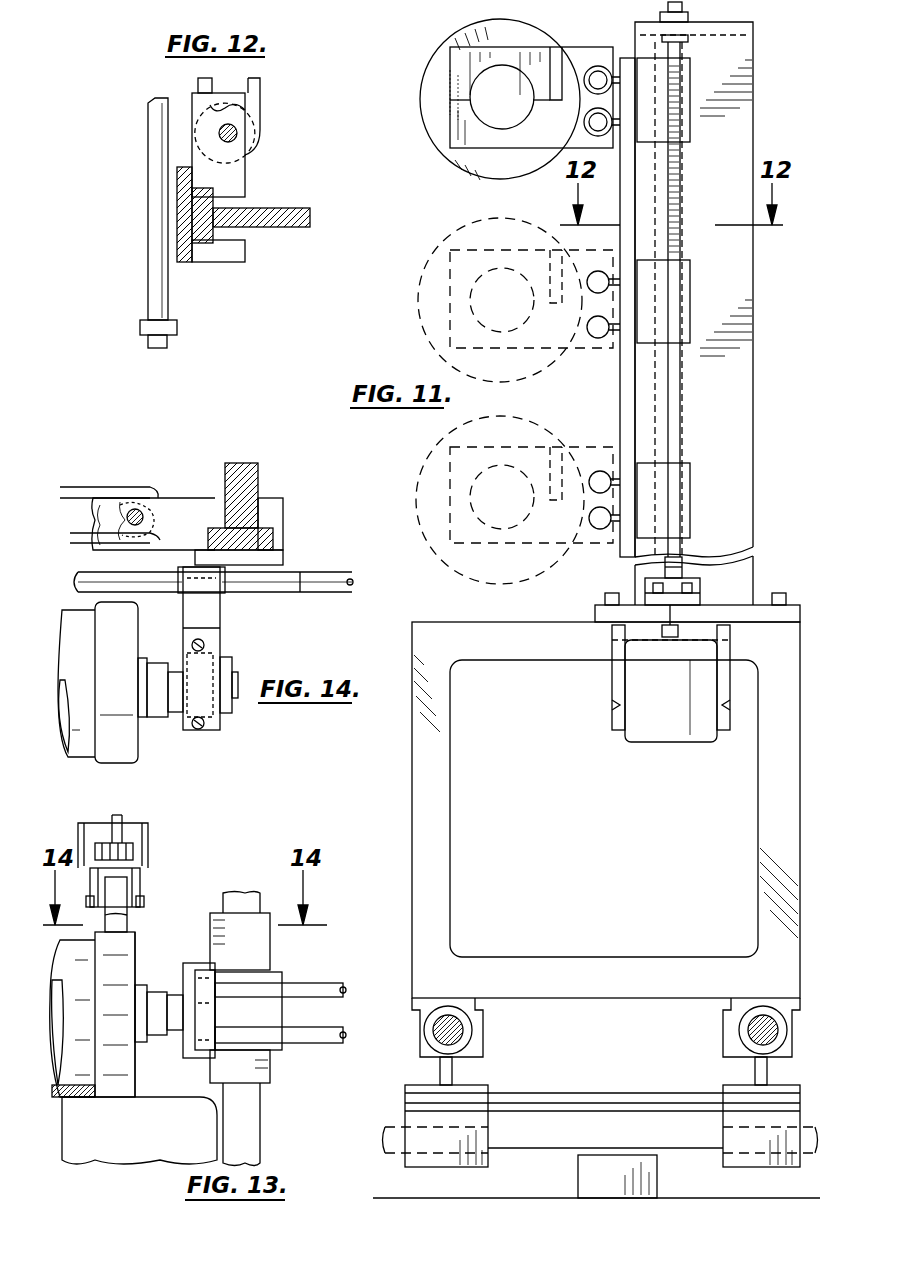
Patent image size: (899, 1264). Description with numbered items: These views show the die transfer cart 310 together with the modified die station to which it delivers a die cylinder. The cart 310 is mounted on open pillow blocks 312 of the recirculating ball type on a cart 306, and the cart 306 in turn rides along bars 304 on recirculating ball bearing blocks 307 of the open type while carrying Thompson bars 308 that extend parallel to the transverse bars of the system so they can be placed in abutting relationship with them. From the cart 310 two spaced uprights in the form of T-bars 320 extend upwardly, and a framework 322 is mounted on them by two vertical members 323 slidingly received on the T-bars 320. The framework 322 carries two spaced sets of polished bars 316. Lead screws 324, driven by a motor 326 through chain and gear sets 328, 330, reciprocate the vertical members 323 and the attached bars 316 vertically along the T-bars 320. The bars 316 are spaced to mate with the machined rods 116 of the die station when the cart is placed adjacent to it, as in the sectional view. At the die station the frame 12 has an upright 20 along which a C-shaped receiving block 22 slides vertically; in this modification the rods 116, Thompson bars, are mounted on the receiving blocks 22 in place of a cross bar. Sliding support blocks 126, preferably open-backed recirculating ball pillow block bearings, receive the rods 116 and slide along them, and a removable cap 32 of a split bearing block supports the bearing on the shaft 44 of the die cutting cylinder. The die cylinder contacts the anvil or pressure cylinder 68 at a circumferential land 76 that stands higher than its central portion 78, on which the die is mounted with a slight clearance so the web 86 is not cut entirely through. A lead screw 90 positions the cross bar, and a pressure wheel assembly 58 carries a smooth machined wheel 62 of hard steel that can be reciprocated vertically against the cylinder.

In FIG. 14, the frame 12 is at (233, 466).
In FIG. 13, the frame 12 is at (238, 892).
In FIG. 14, the upright 20 is at (275, 546).
In FIG. 13, the upright 20 is at (271, 949).
In FIG. 14, the receiving block 22 is at (283, 512).
In FIG. 13, the receiving block 22 is at (272, 1055).
In FIG. 14, the removable cap 32 is at (200, 730).
In FIG. 14, the shaft 44 is at (175, 697).
In FIG. 13, the shaft 44 is at (178, 992).
In FIG. 13, the pressure wheel assembly 58 is at (148, 852).
In FIG. 13, the smooth machined wheel 62 is at (115, 920).
In FIG. 13, the anvil or pressure cylinder 68 is at (100, 1160).
In FIG. 13, the circumferential land 76 is at (132, 957).
In FIG. 14, the central portion 78 is at (85, 758).
In FIG. 13, the central portion 78 is at (118, 1098).
In FIG. 11, the central portion 78 is at (440, 152).
In FIG. 13, the web 86 is at (90, 1099).
In FIG. 14, the lead screw 90 is at (141, 506).
In FIG. 14, the machined rod 116 is at (278, 582).
In FIG. 13, the machined rod 116 is at (291, 987).
In FIG. 14, the sliding support block 126 is at (210, 614).
In FIG. 13, the sliding support block 126 is at (189, 1048).
In FIG. 11, the sliding support block 126 is at (565, 153).
In FIG. 11, the bar 304 is at (384, 1148).
In FIG. 11, the cart 306 is at (584, 1094).
In FIG. 11, the recirculating ball bearing block 307 is at (448, 1165).
In FIG. 11, the Thompson bar 308 is at (462, 1034).
In FIG. 11, the transfer frame or cart 310 is at (411, 801).
In FIG. 11, the open pillow block 312 is at (420, 1012).
In FIG. 12, the polished bar 316 is at (148, 229).
In FIG. 14, the polished bar 316 is at (338, 575).
In FIG. 13, the polished bar 316 is at (297, 1023).
In FIG. 11, the polished bar 316 is at (586, 112).
In FIG. 12, the T-bar 320 is at (283, 224).
In FIG. 11, the T-bar 320 is at (755, 378).
In FIG. 12, the framework 322 is at (243, 261).
In FIG. 11, the framework 322 is at (625, 56).
In FIG. 12, the vertical member 323 is at (181, 263).
In FIG. 11, the vertical member 323 is at (627, 182).
In FIG. 12, the lead screw 324 is at (237, 133).
In FIG. 11, the lead screw 324 is at (684, 410).
In FIG. 11, the motor 326 is at (650, 734).
In FIG. 12, the chain and gear set 328 is at (260, 80).
In FIG. 11, the chain and gear set 328 is at (645, 581).
In FIG. 12, the chain and gear set 330 is at (262, 102).
In FIG. 11, the chain and gear set 330 is at (673, 578).